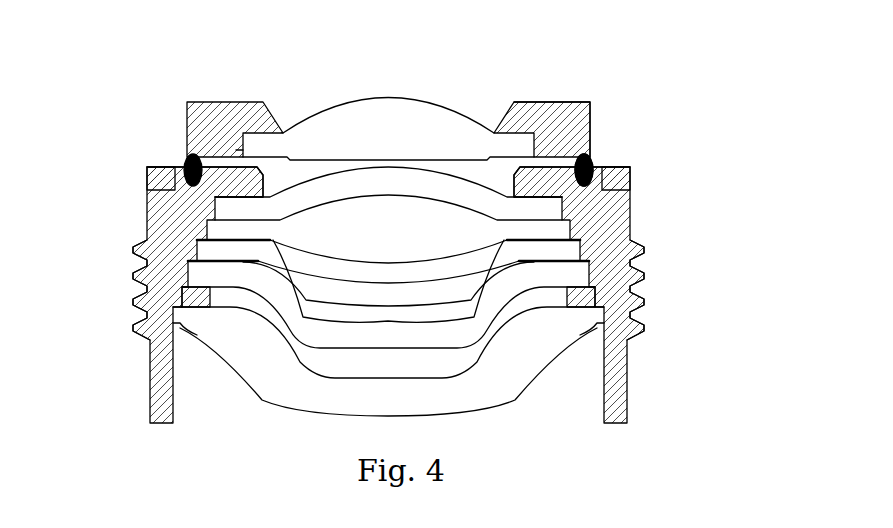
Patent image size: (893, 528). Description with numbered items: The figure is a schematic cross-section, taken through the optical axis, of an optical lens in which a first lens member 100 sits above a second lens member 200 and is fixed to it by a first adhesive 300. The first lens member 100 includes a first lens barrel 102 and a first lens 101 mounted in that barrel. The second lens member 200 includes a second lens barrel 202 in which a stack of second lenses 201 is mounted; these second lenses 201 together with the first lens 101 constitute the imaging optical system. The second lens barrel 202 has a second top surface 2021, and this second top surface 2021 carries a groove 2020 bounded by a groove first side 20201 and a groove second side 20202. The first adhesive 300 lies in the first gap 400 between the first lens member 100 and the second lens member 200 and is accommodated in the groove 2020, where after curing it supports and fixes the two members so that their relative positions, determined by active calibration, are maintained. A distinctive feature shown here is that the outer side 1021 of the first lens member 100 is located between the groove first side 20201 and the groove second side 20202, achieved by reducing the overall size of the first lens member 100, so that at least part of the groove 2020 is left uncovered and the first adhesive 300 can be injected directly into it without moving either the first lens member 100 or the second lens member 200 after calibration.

The first lens member 100 is at (511, 96).
The first lens 101 is at (397, 117).
The first lens barrel 102 is at (237, 146).
The outer side of the first structural region 1021 is at (592, 118).
The second lens 201 is at (363, 182).
The second lens member 200 is at (643, 228).
The second lens barrel 202 is at (622, 277).
The groove 2020 is at (173, 197).
The groove first side 20201 is at (176, 175).
The groove second side 20202 is at (620, 185).
The second top surface 2021 is at (188, 158).
The first adhesive 300 is at (606, 185).
The first gap 400 is at (236, 148).